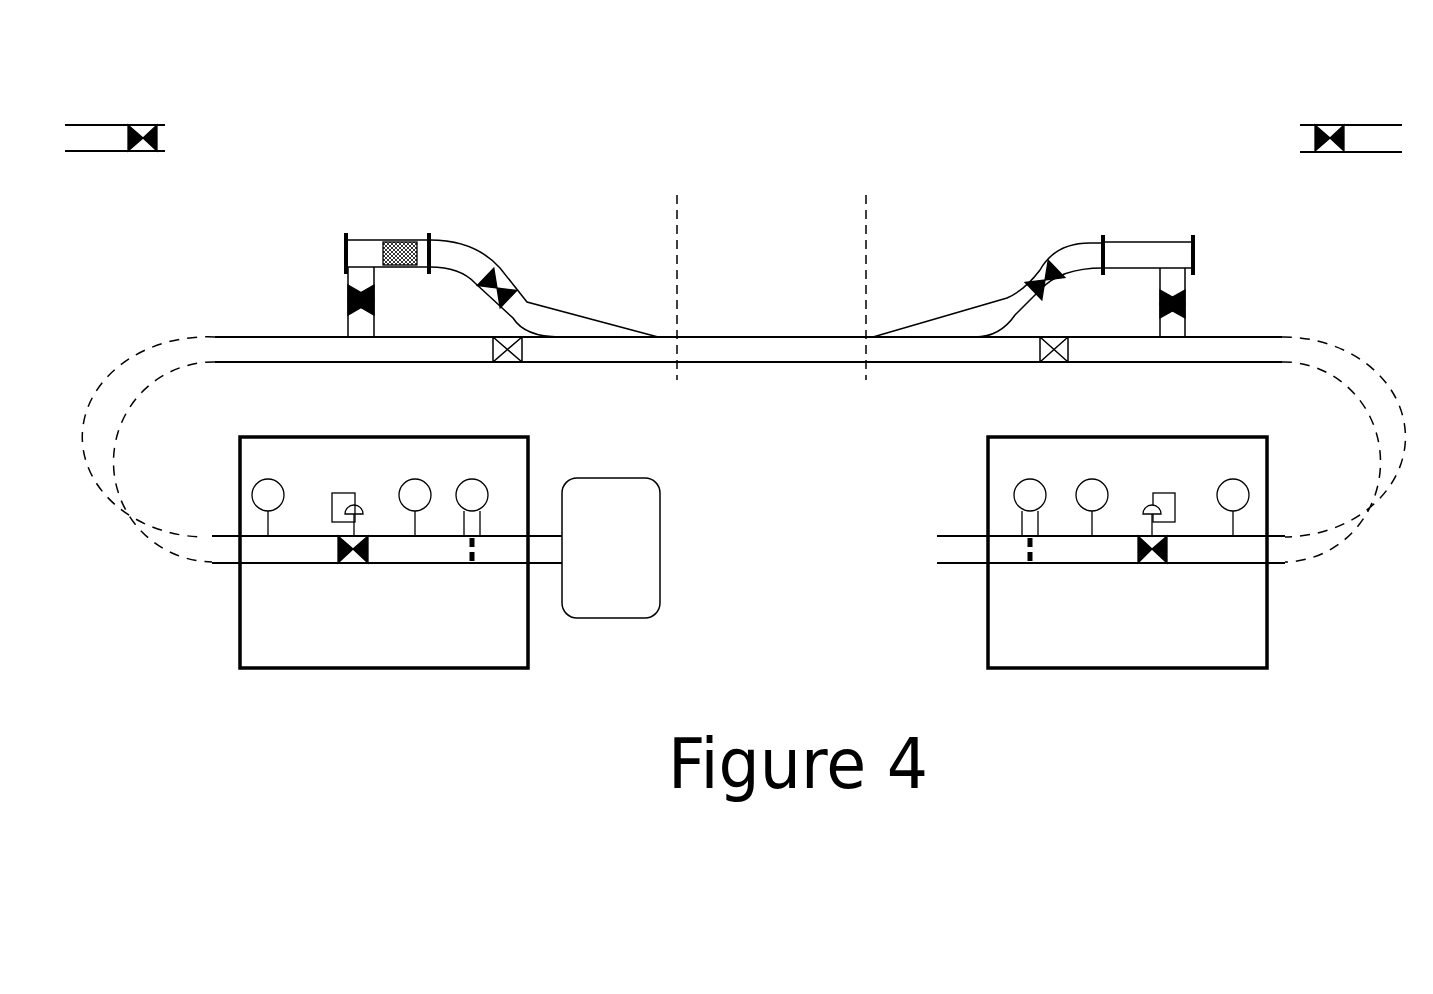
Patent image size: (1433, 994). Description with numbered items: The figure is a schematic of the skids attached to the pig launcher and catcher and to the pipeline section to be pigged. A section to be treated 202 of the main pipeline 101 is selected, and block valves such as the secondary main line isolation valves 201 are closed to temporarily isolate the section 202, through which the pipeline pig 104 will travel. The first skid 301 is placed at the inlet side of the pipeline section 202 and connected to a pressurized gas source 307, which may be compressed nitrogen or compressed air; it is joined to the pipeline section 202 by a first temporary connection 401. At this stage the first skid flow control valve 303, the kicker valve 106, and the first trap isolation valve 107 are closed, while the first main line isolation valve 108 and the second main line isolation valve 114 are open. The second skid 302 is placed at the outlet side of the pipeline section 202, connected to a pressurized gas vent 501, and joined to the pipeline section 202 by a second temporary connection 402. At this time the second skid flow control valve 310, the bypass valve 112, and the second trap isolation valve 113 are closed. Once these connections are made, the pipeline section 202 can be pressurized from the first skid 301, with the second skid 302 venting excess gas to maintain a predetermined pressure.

The main pipeline 101 is at (395, 375).
The pipeline pig 104 is at (410, 224).
The kicker valve 106 is at (320, 300).
The first trap isolation valve 107 is at (525, 256).
The first main line isolation valve 108 is at (512, 378).
The bypass valve 112 is at (1212, 303).
The second trap isolation valve 113 is at (1020, 254).
The second main line isolation valve 114 is at (1050, 378).
The secondary main line isolation valve 201 is at (155, 103).
The pipeline section to be pigged 202 is at (853, 229).
The first skid 301 is at (387, 581).
The second skid 302 is at (1127, 580).
The first flow control valve 303 is at (360, 586).
The pressurized gas source 307 is at (611, 548).
The second flow control valve 310 is at (1145, 592).
The first temporary connection 401 is at (100, 528).
The second temporary connection 402 is at (1408, 527).
The pressurized gas vent 501 is at (1071, 553).